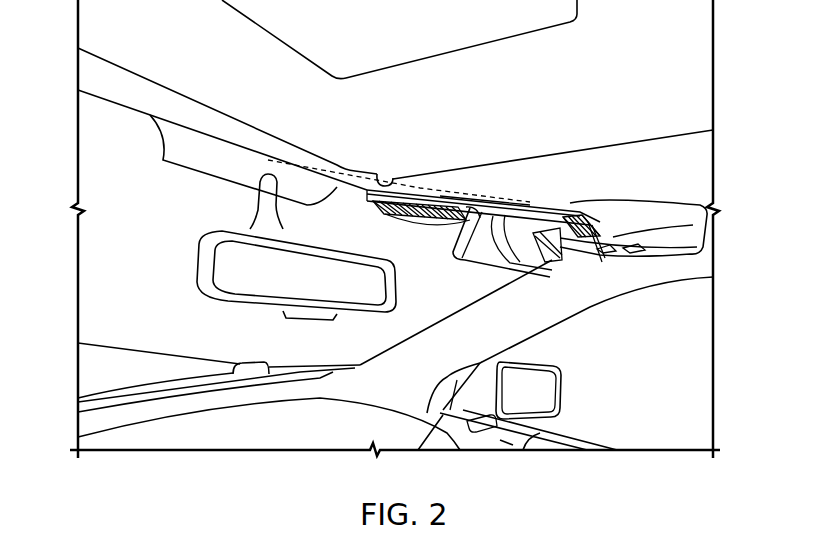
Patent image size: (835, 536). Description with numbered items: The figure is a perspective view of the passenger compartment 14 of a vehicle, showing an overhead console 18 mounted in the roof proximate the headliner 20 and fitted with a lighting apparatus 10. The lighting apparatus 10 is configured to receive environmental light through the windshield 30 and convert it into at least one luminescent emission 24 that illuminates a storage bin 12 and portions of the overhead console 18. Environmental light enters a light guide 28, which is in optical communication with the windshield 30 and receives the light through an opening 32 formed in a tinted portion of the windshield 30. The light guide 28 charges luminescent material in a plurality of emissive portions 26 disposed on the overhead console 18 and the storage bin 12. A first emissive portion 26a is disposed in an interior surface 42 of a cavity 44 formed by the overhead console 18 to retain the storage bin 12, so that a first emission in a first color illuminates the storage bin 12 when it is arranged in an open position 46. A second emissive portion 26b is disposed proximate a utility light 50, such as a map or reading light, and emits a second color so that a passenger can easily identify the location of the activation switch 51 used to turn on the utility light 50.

The lighting apparatus 10 is at (553, 190).
The storage bin 12 is at (565, 284).
The passenger compartment 14 is at (460, 361).
The overhead console 18 is at (503, 78).
The headliner 20 is at (245, 107).
The luminescent emission 24 is at (553, 227).
The emissive portions 26 is at (580, 213).
The first emissive portion 26a is at (640, 232).
The second emissive portion 26b is at (391, 175).
The light guide 28 is at (450, 192).
The windshield 30 is at (168, 273).
The opening 32 is at (280, 162).
The interior surface 42 is at (616, 212).
The cavity 44 is at (524, 233).
The open position 46 is at (433, 250).
The utility light 50 is at (420, 219).
The activation switch 51 is at (471, 207).